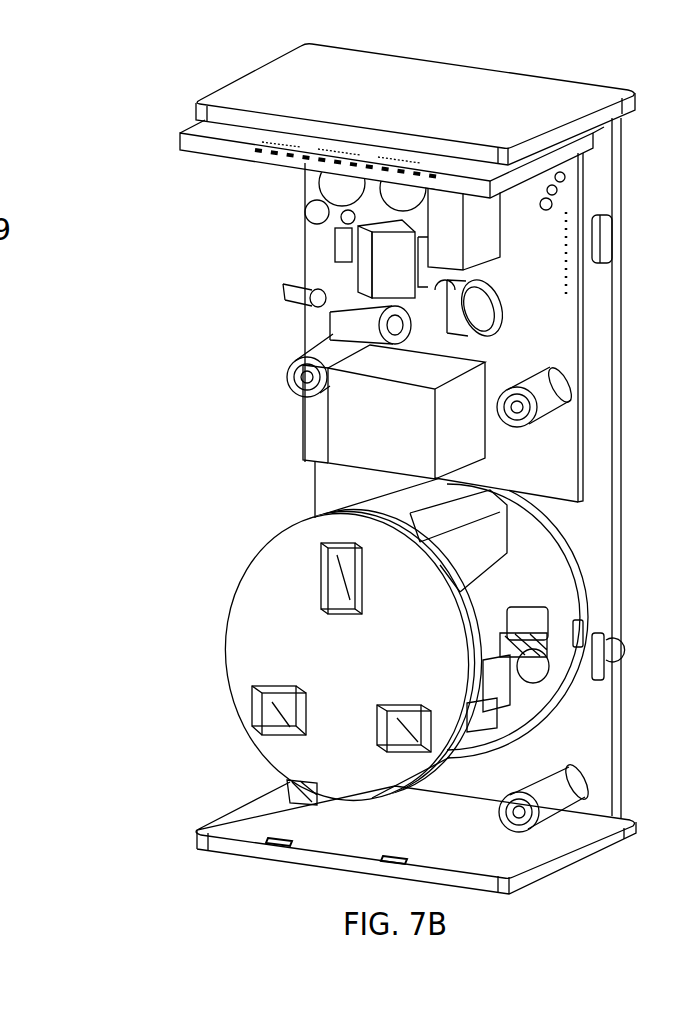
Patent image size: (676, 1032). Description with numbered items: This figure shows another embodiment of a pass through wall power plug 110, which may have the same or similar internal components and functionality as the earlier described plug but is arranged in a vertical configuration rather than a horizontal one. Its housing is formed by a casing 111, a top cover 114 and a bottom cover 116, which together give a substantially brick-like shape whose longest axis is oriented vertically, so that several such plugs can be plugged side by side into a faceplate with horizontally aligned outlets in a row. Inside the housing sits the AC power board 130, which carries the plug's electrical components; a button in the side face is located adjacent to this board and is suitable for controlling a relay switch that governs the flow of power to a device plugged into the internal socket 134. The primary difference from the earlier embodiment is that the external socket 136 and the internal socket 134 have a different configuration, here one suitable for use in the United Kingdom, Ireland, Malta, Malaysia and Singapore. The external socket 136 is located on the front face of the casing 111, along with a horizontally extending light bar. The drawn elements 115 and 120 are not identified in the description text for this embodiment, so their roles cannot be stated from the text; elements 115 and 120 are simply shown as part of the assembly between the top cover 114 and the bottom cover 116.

The pass through wall power plug 110 is at (164, 845).
The casing 111 is at (310, 468).
The top cover 114 is at (480, 90).
The transformer / support frame 115 is at (337, 487).
The bottom cover 116 is at (563, 863).
The indicator light board 120 is at (240, 139).
The AC power board 130 is at (312, 328).
The internal socket 134 is at (265, 670).
The external socket 136 is at (312, 658).